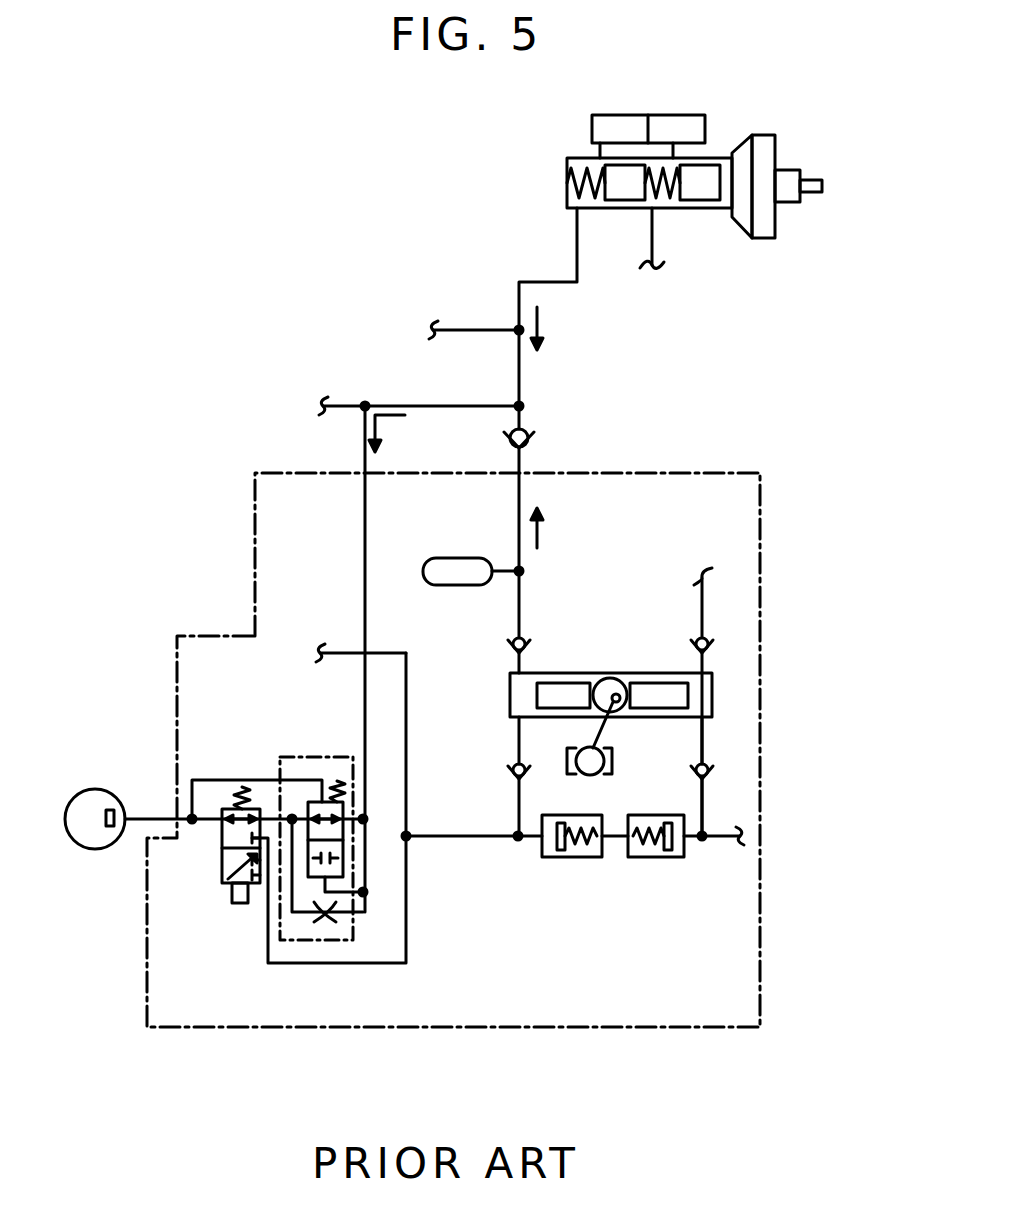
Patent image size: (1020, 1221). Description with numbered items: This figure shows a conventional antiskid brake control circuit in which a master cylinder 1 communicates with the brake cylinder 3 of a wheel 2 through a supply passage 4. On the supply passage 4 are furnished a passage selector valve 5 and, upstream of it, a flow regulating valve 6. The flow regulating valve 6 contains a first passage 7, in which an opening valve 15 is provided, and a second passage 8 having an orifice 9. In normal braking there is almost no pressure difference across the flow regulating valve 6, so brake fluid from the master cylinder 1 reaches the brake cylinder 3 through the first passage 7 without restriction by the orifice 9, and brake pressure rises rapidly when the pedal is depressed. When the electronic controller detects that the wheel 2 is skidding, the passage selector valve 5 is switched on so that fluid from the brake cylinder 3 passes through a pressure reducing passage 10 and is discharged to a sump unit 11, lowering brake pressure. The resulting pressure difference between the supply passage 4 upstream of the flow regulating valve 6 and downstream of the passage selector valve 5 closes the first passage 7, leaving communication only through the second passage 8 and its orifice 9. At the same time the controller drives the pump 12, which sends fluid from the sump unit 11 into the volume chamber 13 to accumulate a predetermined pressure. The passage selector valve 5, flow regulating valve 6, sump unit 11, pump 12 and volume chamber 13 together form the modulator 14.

The master cylinder 1 is at (567, 162).
The wheel 2 is at (97, 789).
The brake cylinder 3 is at (110, 828).
The supply passage 4 is at (365, 700).
The passage selector valve 5 is at (222, 871).
The flow regulating valve 6 is at (280, 912).
The first passage 7 is at (318, 822).
The second passage 8 is at (345, 914).
The orifice 9 is at (325, 918).
The pressure reducing passage 10 is at (406, 898).
The sump unit 11 is at (630, 858).
The pump 12 is at (612, 678).
The volume chamber 13 is at (455, 557).
The modulator 14 is at (762, 812).
The opening valve 15 is at (318, 800).